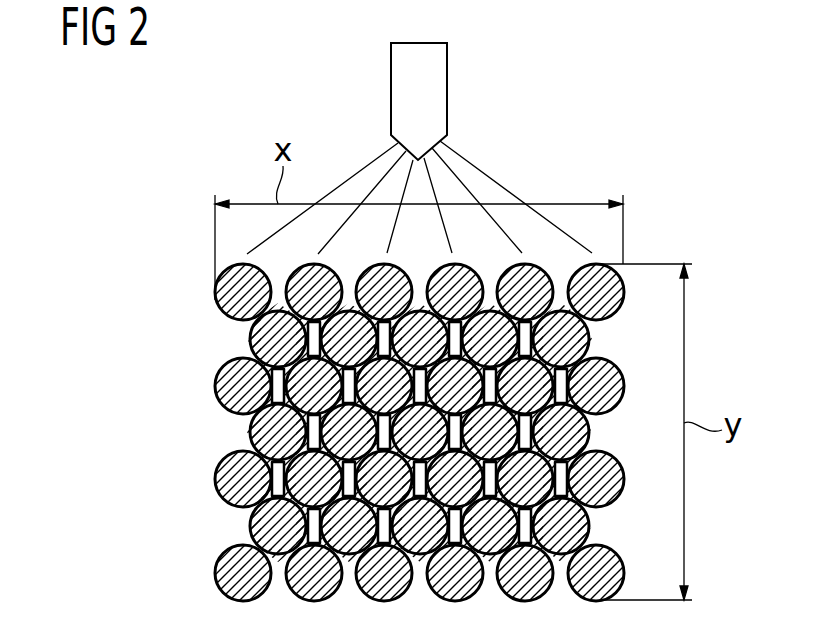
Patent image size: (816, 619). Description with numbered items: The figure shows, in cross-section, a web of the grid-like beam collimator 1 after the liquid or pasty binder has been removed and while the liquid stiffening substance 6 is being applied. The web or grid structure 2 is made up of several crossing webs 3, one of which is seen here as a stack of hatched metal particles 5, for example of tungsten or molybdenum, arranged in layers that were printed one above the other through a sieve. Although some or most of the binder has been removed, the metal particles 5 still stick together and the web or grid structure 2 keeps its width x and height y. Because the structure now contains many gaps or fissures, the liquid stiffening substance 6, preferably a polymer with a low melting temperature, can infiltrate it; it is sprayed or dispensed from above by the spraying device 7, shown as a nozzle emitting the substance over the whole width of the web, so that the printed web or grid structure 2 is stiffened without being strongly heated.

The grid-like beam collimator 1 is at (690, 202).
The web or grid structure 2 is at (160, 350).
The web 3 is at (193, 484).
The metal particles 5 is at (440, 265).
The liquid stiffening substance 6 is at (493, 177).
The spraying device 7 is at (447, 67).